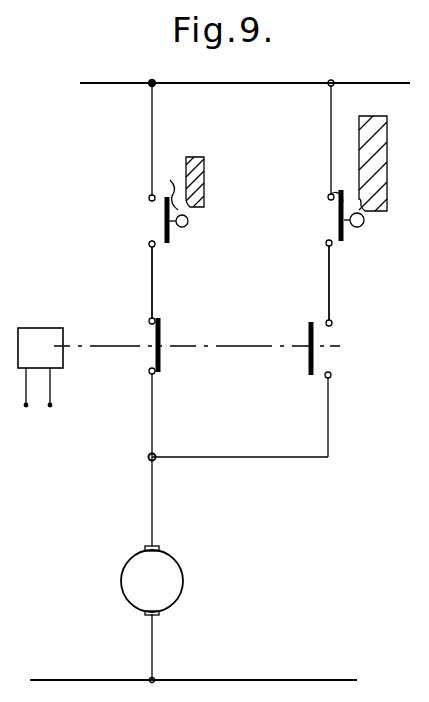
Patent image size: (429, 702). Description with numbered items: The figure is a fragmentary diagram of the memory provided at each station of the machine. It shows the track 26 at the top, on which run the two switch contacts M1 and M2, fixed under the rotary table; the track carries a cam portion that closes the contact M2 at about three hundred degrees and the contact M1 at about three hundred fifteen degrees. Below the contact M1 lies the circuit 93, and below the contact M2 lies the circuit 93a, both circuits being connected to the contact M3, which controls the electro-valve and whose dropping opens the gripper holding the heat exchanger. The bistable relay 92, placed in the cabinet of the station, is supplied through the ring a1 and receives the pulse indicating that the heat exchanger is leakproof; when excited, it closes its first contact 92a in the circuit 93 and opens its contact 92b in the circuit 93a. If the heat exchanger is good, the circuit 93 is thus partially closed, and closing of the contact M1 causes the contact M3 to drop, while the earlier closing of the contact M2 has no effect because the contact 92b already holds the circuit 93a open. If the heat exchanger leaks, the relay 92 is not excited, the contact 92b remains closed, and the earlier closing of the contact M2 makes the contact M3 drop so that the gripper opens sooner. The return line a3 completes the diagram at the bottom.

The track 26 is at (272, 82).
The switch contact M1 is at (187, 170).
The switch contact M2 is at (360, 158).
The circuit 93 is at (151, 260).
The circuit 93a is at (331, 280).
The bistable relay 92 is at (62, 312).
The first contact 92a is at (161, 333).
The contact 92b is at (308, 333).
The ring a1 is at (32, 425).
The contact M3 is at (152, 580).
The return line a3 is at (226, 662).